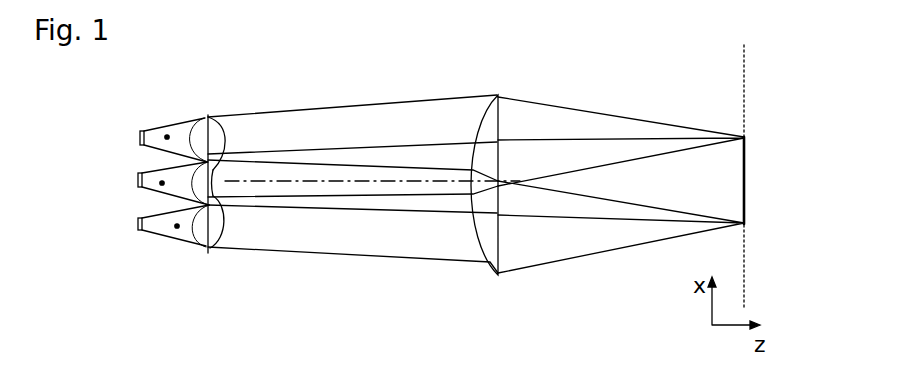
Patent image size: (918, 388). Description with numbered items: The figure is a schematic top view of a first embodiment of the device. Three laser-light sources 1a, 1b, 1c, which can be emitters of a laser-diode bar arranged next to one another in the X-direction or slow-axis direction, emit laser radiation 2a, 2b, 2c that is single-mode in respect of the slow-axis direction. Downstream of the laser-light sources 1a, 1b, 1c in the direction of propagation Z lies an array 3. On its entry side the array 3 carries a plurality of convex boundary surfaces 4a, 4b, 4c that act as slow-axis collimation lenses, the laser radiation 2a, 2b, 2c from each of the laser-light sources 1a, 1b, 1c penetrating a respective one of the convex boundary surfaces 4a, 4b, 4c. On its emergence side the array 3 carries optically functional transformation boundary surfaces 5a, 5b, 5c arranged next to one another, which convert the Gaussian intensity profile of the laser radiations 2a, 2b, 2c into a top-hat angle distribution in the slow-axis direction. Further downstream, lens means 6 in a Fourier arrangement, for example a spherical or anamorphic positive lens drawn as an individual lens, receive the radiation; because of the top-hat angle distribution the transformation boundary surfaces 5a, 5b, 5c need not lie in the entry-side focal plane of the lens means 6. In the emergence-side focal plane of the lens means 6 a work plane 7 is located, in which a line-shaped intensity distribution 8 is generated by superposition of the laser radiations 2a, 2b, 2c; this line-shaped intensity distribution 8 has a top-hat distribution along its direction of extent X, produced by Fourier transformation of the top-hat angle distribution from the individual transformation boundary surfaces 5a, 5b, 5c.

The laser-light source 1a is at (140, 135).
The laser-light source 1b is at (138, 177).
The laser-light source 1c is at (138, 226).
The laser radiation 2a is at (167, 135).
The laser radiation 2b is at (162, 183).
The laser radiation 2c is at (177, 227).
The array 3 is at (208, 252).
The convex boundary surface 4a is at (200, 118).
The convex boundary surface 4b is at (203, 165).
The convex boundary surface 4c is at (200, 248).
The transformation boundary surface 5a is at (223, 132).
The transformation boundary surface 5b is at (213, 183).
The transformation boundary surface 5c is at (214, 246).
The lens means 6 is at (498, 95).
The work plane 7 is at (742, 66).
The line-shaped intensity distribution 8 is at (748, 170).